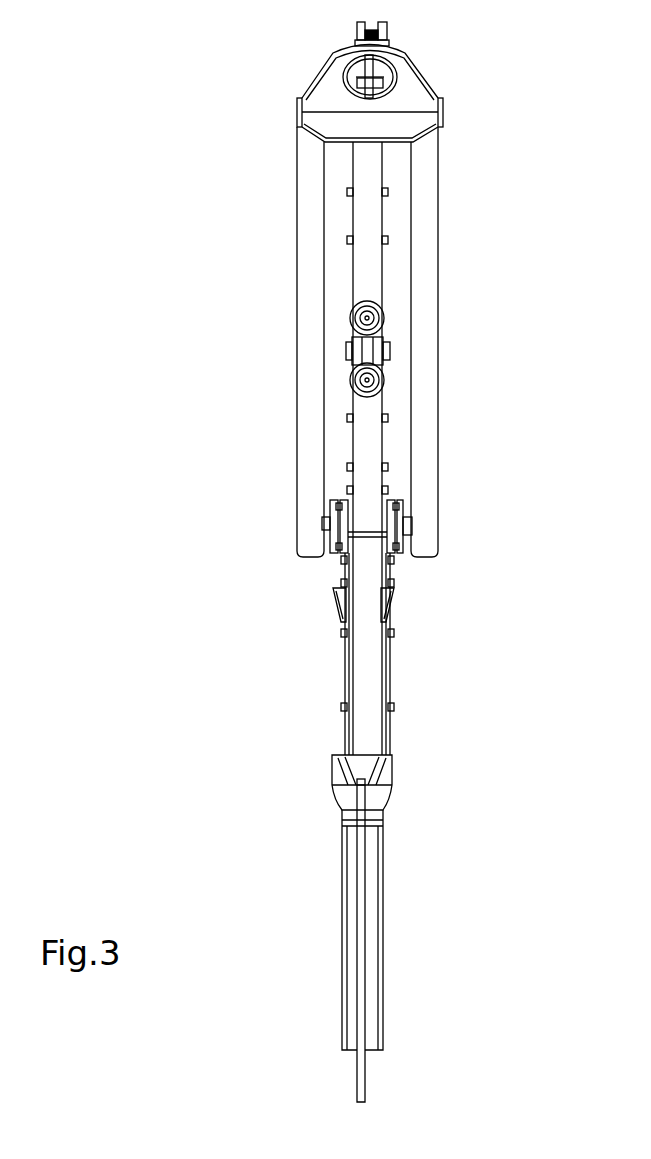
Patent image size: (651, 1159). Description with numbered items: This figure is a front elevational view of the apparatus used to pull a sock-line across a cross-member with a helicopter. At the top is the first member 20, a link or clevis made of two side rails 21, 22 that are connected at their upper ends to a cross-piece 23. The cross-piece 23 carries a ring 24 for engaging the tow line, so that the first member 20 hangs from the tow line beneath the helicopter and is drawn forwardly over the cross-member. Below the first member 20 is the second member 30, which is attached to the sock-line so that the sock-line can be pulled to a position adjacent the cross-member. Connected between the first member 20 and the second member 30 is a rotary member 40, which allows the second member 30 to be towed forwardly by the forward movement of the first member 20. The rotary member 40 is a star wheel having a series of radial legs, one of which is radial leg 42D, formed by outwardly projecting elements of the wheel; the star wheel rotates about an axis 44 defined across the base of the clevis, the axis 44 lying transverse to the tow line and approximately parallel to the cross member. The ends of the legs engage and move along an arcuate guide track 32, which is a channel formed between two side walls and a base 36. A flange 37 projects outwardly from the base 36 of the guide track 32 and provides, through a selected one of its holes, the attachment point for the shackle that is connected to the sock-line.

The first member 20 is at (453, 322).
The side rail 21 is at (294, 357).
The side rail 22 is at (423, 403).
The cross-piece 23 is at (402, 127).
The ring 24 is at (410, 90).
The axis 44 is at (413, 523).
The rotary member 40 is at (408, 604).
The radial leg 42D is at (362, 702).
The second member 30 is at (422, 1002).
The guide track 32 is at (387, 938).
The base 36 is at (368, 878).
The flange 37 is at (368, 1072).